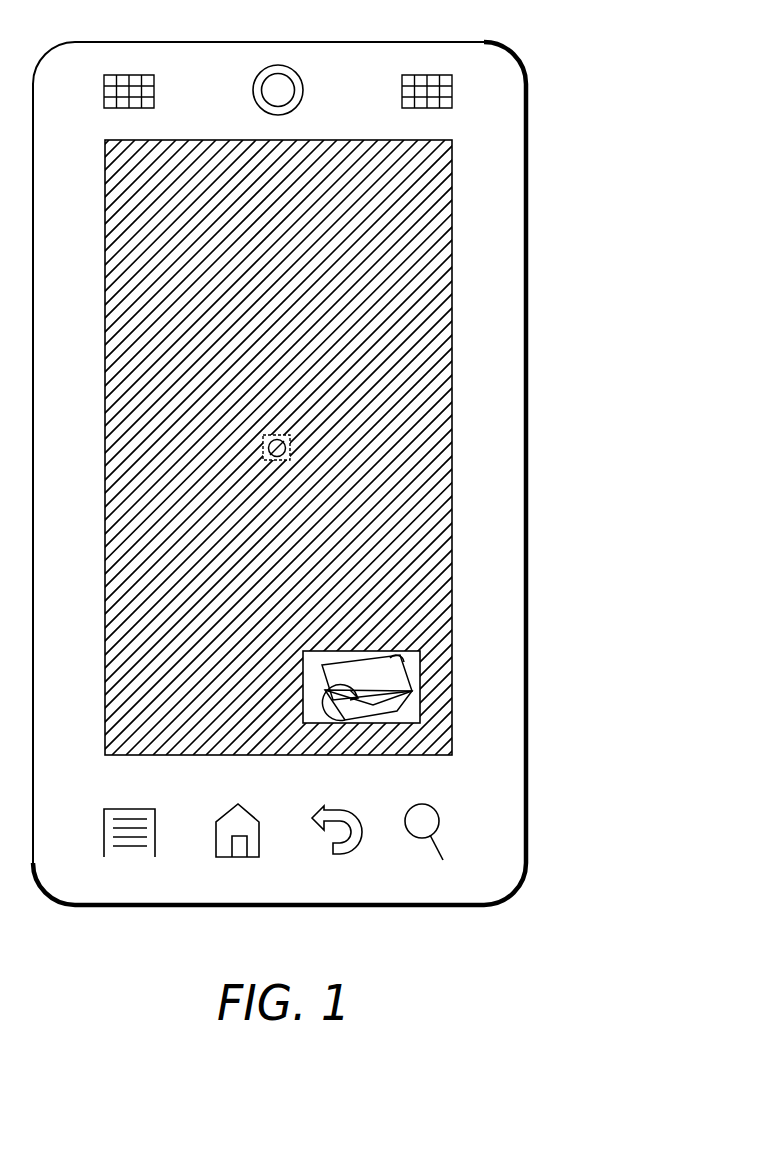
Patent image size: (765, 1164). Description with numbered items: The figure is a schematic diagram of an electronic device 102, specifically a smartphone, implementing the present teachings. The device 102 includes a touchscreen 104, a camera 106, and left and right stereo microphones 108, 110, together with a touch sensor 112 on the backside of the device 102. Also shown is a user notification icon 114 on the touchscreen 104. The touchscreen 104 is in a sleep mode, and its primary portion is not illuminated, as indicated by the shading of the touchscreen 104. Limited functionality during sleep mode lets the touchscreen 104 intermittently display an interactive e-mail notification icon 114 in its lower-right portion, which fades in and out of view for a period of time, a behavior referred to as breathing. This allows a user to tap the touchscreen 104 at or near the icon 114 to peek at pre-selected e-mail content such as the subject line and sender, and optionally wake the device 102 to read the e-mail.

The electronic device 102 is at (601, 48).
The touchscreen 104 is at (117, 295).
The camera 106 is at (297, 74).
The microphone 108 is at (155, 90).
The microphone 110 is at (402, 101).
The touch sensor 112 is at (263, 442).
The user notification icon 114 is at (422, 685).